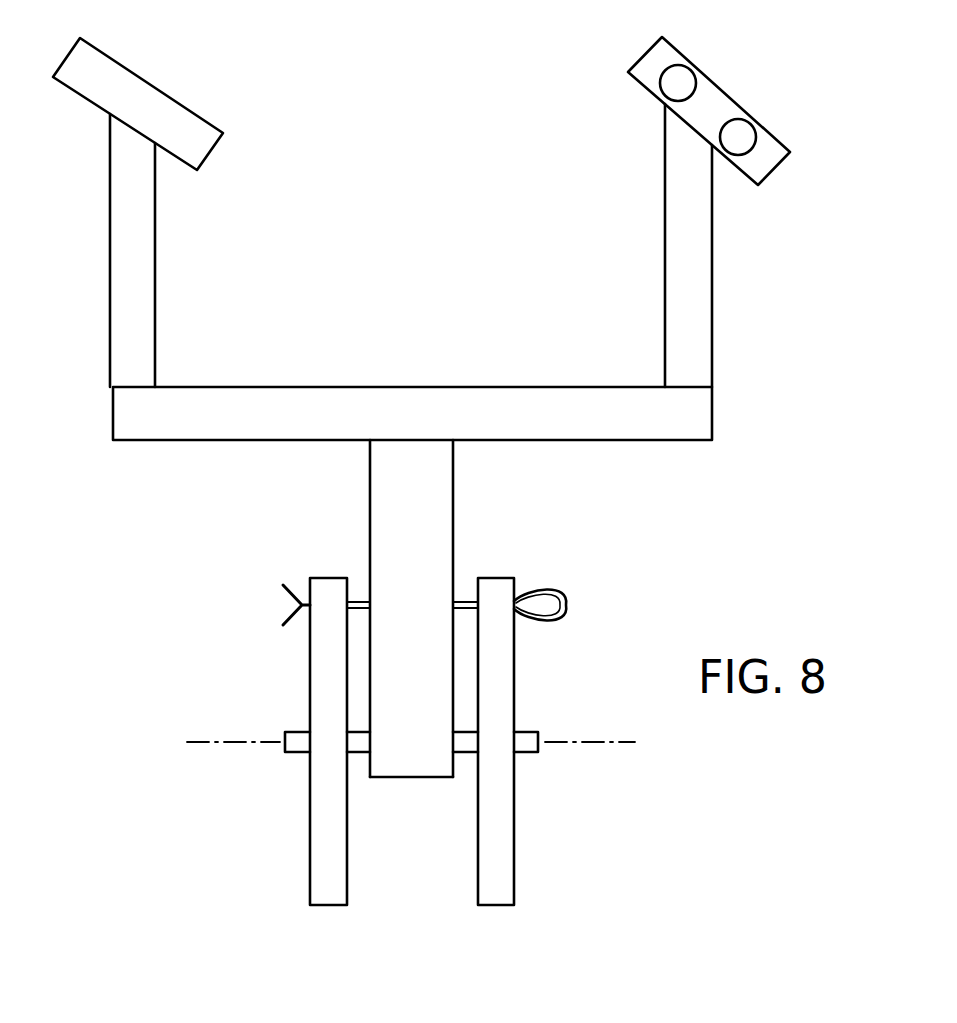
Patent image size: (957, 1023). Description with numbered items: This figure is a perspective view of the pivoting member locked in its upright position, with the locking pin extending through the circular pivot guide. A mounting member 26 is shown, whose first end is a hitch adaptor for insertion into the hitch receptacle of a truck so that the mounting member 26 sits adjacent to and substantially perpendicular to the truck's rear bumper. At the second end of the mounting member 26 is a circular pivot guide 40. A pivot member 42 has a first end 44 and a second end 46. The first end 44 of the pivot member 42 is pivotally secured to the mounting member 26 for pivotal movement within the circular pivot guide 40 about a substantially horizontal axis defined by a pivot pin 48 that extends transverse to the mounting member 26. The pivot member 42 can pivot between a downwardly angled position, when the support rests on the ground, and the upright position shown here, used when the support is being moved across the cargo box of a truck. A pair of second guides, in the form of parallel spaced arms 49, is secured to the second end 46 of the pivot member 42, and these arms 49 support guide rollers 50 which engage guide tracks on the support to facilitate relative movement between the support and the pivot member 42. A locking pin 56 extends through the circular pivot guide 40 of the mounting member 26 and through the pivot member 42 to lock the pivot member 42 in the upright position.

The mounting member 26 is at (248, 807).
The circular pivot guide 40 is at (517, 835).
The pivot member 42 is at (368, 540).
The first end 44 is at (408, 778).
The second end 46 is at (455, 448).
The pivot pin 48 is at (525, 745).
The parallel spaced arms 49 is at (110, 235).
The guide rollers 50 is at (757, 120).
The locking pin 56 is at (563, 595).